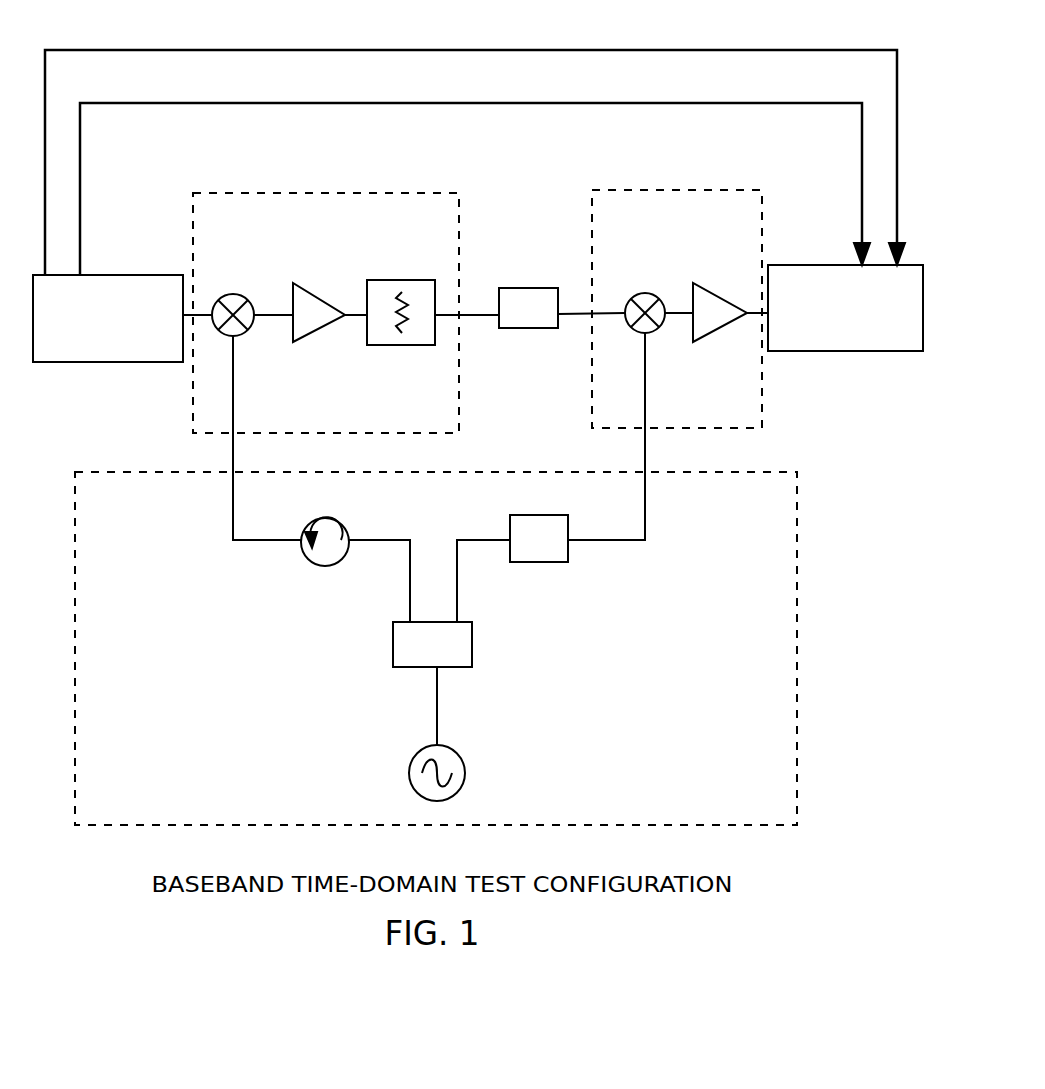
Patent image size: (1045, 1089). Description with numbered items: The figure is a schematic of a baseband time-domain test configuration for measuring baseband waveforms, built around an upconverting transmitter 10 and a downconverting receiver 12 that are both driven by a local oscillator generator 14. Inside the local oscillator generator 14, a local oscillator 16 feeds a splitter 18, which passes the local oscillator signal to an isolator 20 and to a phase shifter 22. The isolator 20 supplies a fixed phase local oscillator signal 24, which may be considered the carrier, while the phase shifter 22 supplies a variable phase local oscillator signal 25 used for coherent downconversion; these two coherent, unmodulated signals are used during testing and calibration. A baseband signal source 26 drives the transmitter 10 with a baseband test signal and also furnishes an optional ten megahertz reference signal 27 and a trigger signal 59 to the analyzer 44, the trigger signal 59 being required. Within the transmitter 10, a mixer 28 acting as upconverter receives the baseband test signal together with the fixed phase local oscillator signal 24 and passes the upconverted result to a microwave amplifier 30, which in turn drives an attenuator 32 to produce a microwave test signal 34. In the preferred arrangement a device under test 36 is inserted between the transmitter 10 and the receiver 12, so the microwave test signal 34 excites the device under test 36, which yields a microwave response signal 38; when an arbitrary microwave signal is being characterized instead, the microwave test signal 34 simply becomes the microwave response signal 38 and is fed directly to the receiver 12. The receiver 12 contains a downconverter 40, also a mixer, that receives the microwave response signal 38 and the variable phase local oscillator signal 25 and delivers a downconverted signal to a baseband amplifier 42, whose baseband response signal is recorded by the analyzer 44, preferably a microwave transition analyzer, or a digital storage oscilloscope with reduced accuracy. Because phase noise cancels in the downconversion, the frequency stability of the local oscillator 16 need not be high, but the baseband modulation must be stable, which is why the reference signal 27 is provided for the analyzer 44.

The upconverting transmitter 10 is at (308, 193).
The downconverting receiver 12 is at (657, 190).
The local oscillator generator 14 is at (797, 577).
The local oscillator 16 is at (459, 753).
The splitter 18 is at (450, 667).
The isolator 20 is at (323, 566).
The phase shifter 22 is at (527, 562).
The fixed phase local oscillator signal 24 is at (233, 500).
The variable phase local oscillator signal 25 is at (645, 502).
The baseband signal source 26 is at (92, 275).
The reference signal 27 is at (460, 105).
The mixer 28 is at (250, 330).
The microwave amplifier 30 is at (338, 303).
The attenuator 32 is at (380, 345).
The microwave test signal 34 is at (477, 315).
The device under test 36 is at (510, 328).
The microwave response signal 38 is at (576, 313).
The downconverter 40 is at (660, 322).
The baseband amplifier 42 is at (727, 298).
The analyzer 44 is at (778, 265).
The trigger signal 59 is at (460, 48).